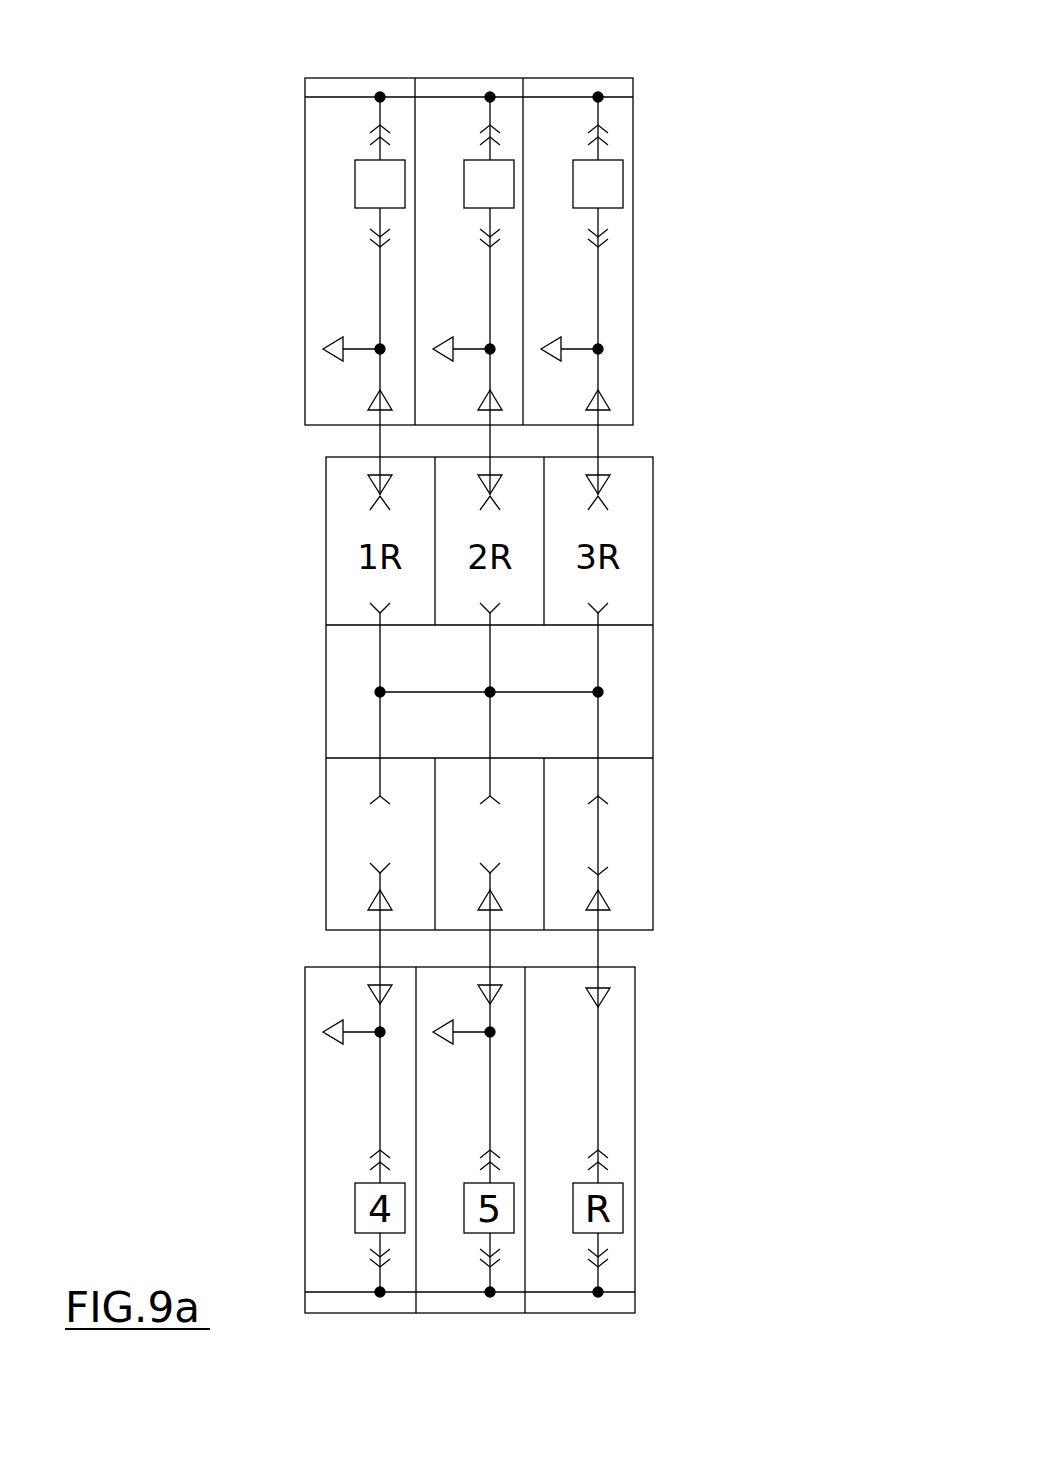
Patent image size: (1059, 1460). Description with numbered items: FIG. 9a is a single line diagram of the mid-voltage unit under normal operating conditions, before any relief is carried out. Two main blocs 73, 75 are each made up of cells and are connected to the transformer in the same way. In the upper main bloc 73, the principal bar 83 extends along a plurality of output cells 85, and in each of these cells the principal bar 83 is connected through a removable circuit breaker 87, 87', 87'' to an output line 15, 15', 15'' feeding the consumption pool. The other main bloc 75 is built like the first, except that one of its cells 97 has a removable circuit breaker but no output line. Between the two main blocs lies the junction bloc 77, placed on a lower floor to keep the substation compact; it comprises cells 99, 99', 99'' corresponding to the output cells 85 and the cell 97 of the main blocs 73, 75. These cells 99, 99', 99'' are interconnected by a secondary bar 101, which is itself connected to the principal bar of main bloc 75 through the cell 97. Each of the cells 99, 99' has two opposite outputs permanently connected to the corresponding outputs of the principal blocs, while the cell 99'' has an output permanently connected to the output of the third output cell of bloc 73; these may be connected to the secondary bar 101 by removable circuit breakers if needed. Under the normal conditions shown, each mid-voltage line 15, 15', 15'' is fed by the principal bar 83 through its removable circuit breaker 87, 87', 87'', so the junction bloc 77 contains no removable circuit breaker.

The main bloc 73 is at (228, 448).
The main bloc 75 is at (263, 1132).
The junction bloc 77 is at (283, 677).
The principal bar 83 is at (325, 93).
The output cell 85 is at (372, 78).
The removable circuit breaker 87 is at (298, 197).
The removable circuit breaker 87' is at (656, 202).
The removable circuit breaker 87'' is at (686, 175).
The output line 15 is at (278, 362).
The output line 15' is at (631, 395).
The output line 15'' is at (668, 343).
The secondary bar 101 is at (543, 690).
The cell 99 is at (303, 831).
The cell 99' is at (329, 869).
The cell 99'' is at (690, 836).
The cell 97 is at (580, 1313).